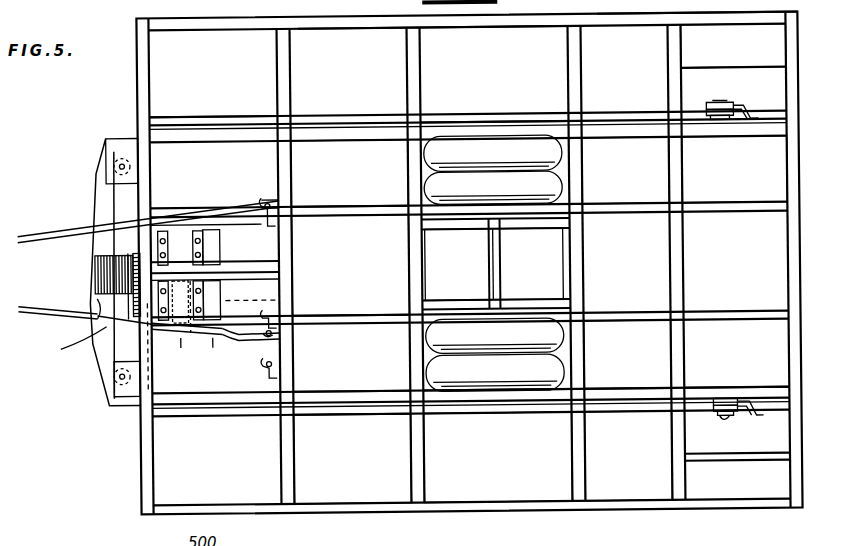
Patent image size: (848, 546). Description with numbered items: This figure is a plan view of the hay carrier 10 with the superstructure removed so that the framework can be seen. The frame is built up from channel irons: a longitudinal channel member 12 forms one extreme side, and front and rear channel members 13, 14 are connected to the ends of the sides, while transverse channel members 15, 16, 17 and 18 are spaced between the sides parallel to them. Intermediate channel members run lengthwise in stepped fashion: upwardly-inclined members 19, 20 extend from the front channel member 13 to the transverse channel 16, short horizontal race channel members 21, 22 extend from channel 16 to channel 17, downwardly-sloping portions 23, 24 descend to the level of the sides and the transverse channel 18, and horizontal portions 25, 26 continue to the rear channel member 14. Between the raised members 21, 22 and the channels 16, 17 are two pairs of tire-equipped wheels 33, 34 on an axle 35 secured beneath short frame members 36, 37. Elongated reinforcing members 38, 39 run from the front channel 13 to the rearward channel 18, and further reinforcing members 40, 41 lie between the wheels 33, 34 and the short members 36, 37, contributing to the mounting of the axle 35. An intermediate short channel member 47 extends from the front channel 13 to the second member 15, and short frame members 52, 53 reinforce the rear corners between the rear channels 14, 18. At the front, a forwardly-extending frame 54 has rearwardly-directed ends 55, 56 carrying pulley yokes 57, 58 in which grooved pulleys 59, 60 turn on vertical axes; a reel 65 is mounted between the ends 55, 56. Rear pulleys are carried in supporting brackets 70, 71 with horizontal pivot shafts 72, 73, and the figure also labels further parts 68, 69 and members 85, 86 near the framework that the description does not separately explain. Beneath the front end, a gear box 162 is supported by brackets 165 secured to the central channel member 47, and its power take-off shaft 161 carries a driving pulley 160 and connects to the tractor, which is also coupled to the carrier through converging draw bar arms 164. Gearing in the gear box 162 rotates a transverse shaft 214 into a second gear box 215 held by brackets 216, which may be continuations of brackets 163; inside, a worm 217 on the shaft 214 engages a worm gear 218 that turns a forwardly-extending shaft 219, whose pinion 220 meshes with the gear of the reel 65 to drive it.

The trailer truck forming a hay carrier 10 is at (137, 487).
The longitudinal channel member 12 is at (558, 20).
The front channel member 13 is at (137, 84).
The rear channel member 14 is at (794, 12).
The transverse channel member 15 is at (296, 487).
The transverse channel member 16 is at (426, 479).
The transverse channel member 17 is at (586, 483).
The transverse channel member 18 is at (656, 340).
The upwardly-inclined channel member 19 is at (318, 390).
The upwardly-inclined channel member 20 is at (322, 140).
The horizontal race channel member 21 is at (507, 404).
The horizontal race channel member 22 is at (481, 120).
The downwardly-sloping channel member 23 is at (622, 392).
The downwardly-sloping channel member 24 is at (636, 141).
The horizontal rear channel member 25 is at (720, 392).
The horizontal rear channel member 26 is at (738, 135).
The tire-equipped wheels 33 is at (426, 342).
The tire-equipped wheels 34 is at (426, 160).
The axle 35 is at (502, 281).
The short frame member 36 is at (453, 303).
The short frame member 37 is at (467, 232).
The elongated reinforcing member 38 is at (353, 414).
The elongated reinforcing member 39 is at (356, 118).
The elongated reinforcing member 40 is at (356, 314).
The elongated reinforcing member 41 is at (374, 214).
The intermediate short channel member 47 is at (234, 270).
The short frame member 52 is at (736, 462).
The short frame member 53 is at (740, 67).
The forwardly-extending frame 54 is at (90, 300).
The end of forwardly-extending frame 55 is at (134, 404).
The end of forwardly-extending frame 56 is at (128, 134).
The pulley yoke 57 is at (116, 394).
The pulley yoke 58 is at (120, 141).
The grooved pulley 59 is at (118, 395).
The grooved pulley 60 is at (120, 163).
The reel 65 is at (92, 312).
The lower latch bracket 68 is at (712, 410).
The upper latch bracket 69 is at (712, 108).
The supporting bracket 70 is at (728, 420).
The supporting bracket 71 is at (752, 108).
The horizontal pivot shaft 72 is at (720, 420).
The horizontal pivot shaft 73 is at (724, 104).
The pivot lever 85 is at (104, 349).
The lever bar 86 is at (114, 202).
The driving pulley 160 is at (276, 320).
The power take-off shaft 161 is at (98, 250).
The gear box 162 is at (218, 236).
The brackets 163 is at (170, 232).
The arms 164 is at (40, 232).
The brackets 165 is at (268, 196).
The transverse shaft 214 is at (250, 290).
The second gear box 215 is at (214, 334).
The brackets 216 is at (226, 318).
The worm 217 is at (208, 331).
The worm gear 218 is at (292, 293).
The forwardly-extending shaft 219 is at (150, 368).
The pinion 220 is at (65, 342).